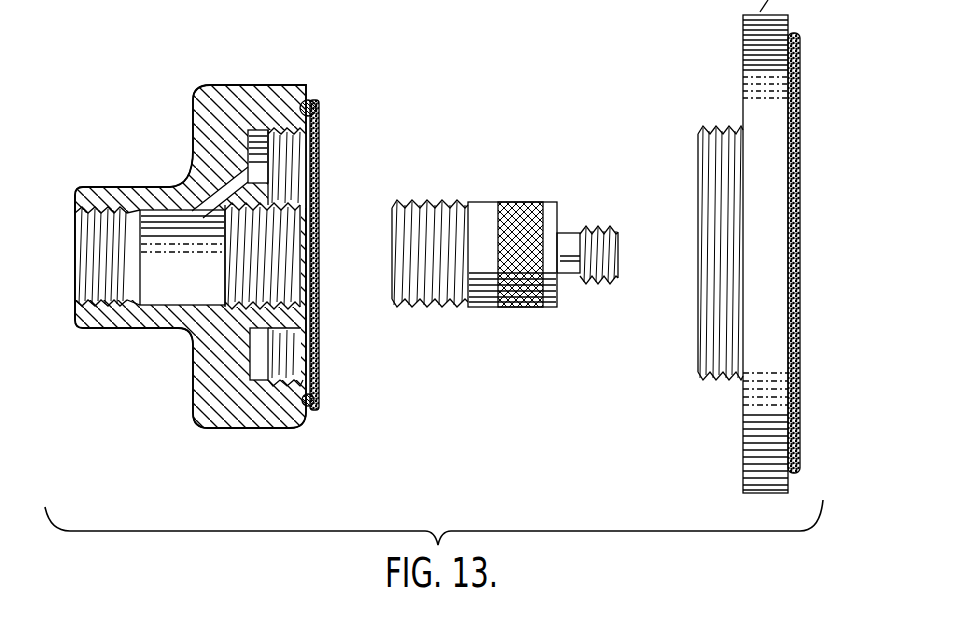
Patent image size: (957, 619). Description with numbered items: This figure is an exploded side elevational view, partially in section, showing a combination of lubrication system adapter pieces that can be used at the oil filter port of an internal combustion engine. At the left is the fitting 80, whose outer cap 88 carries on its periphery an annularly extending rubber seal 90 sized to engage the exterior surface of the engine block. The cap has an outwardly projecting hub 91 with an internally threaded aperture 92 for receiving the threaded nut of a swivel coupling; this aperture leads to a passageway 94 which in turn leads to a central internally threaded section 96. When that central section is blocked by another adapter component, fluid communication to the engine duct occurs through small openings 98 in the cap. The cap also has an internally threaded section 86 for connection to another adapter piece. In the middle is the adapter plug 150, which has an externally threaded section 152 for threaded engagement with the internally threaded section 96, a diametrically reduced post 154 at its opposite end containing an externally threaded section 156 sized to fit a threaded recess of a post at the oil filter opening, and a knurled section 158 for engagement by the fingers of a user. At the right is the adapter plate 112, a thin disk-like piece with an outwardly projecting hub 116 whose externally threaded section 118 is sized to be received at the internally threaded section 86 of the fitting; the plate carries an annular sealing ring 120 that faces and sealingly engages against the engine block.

The fitting 80 is at (254, 60).
The internally threaded section 86 is at (300, 358).
The outer cap 88 is at (283, 85).
The rubber seal 90 is at (318, 108).
The hub 91 is at (125, 187).
The internally threaded aperture 92 is at (78, 267).
The passageway 94 is at (177, 290).
The internally threaded section 96 is at (285, 254).
The small openings 98 is at (195, 165).
The adapter plate 112 is at (751, 246).
The hub 116 is at (684, 229).
The externally threaded section 118 is at (723, 130).
The annular sealing ring 120 is at (800, 60).
The adapter plug 150 is at (508, 248).
The externally threaded section 152 is at (431, 306).
The post 154 is at (572, 233).
The externally threaded section 156 is at (585, 281).
The knurled section 158 is at (517, 308).